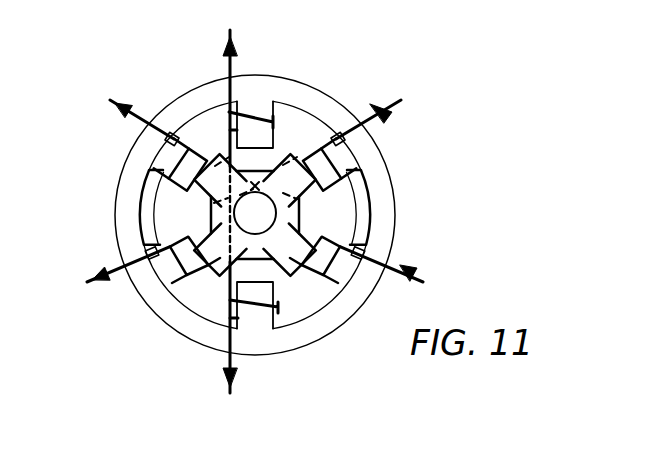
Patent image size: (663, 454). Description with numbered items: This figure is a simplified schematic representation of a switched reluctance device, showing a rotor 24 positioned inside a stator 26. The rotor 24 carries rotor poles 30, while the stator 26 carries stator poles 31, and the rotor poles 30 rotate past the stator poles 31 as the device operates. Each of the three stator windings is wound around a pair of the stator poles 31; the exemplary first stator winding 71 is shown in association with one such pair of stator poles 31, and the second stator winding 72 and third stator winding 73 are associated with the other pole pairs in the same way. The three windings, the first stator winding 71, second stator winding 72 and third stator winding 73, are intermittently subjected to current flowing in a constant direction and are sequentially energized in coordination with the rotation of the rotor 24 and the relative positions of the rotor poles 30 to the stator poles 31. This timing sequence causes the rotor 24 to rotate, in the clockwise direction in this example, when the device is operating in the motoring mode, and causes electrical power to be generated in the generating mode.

The rotor 24 is at (226, 163).
The stator 26 is at (394, 206).
The rotor poles 30 is at (205, 198).
The stator poles 31 is at (273, 133).
The first stator winding 71 is at (232, 62).
The second stator winding 72 is at (393, 112).
The third stator winding 73 is at (147, 124).